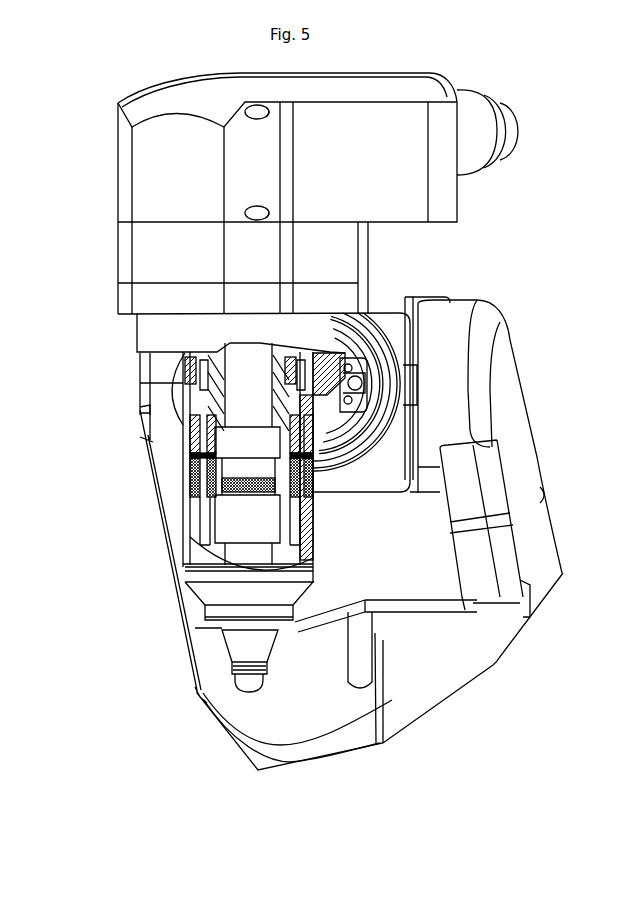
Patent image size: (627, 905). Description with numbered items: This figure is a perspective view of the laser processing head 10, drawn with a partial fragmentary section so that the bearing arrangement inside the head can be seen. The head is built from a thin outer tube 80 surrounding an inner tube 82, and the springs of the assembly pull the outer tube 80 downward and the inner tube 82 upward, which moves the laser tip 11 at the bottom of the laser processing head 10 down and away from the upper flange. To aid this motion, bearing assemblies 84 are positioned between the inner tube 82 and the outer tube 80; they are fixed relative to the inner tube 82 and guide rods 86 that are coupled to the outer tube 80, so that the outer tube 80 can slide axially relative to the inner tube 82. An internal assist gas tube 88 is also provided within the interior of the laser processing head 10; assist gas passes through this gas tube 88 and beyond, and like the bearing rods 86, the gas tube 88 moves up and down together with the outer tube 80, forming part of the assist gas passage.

The laser processing head 10 is at (320, 532).
The laser tip 11 is at (252, 690).
The outer tube 80 is at (187, 515).
The inner tube 82 is at (217, 372).
The bearing assemblies 84 is at (183, 458).
The rods 86 is at (193, 415).
The assist gas tube 88 is at (310, 492).